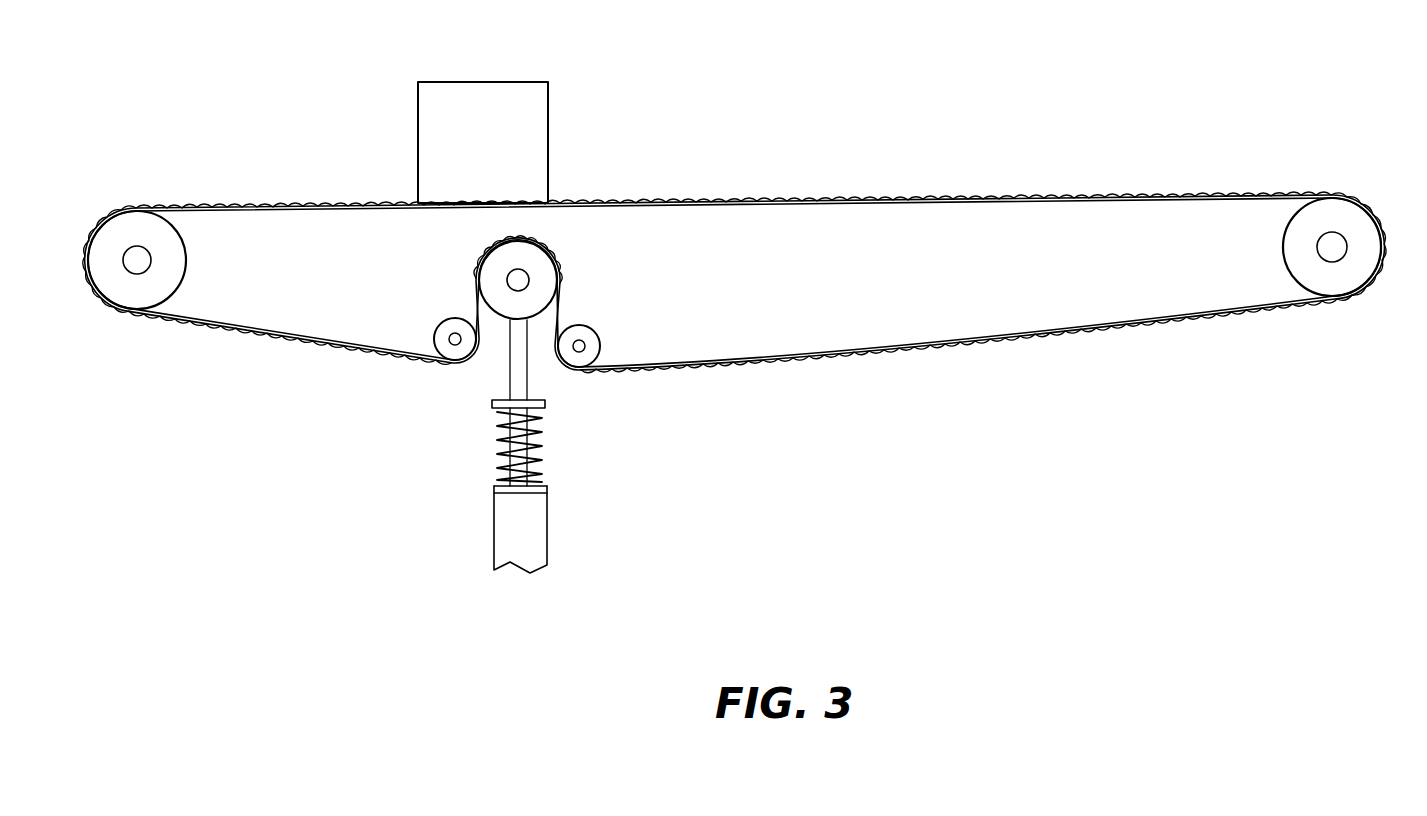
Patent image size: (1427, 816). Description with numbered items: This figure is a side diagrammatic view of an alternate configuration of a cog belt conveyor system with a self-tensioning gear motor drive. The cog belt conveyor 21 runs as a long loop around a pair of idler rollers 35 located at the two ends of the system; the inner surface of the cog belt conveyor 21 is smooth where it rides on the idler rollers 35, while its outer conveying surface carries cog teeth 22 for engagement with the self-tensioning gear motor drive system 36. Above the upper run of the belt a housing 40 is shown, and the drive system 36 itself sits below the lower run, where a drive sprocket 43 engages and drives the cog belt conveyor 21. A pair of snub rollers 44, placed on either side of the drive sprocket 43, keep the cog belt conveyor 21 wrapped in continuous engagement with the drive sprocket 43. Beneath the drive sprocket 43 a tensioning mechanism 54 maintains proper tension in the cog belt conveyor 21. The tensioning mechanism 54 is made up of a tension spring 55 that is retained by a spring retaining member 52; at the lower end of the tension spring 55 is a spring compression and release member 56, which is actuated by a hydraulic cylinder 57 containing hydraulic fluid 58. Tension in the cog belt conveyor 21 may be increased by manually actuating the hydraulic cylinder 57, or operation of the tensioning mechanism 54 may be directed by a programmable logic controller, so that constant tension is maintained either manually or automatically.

The cog belt conveyor 21 is at (940, 199).
The belt teeth 22 is at (812, 200).
The idler roller 35 is at (118, 282).
The self-tensioning gear motor drive system 36 is at (462, 295).
The drive motor housing 40 is at (498, 82).
The drive sprocket 43 is at (548, 277).
The snub roller 44 is at (442, 338).
The spring retaining member 52 is at (492, 404).
The tensioning mechanism 54 is at (556, 448).
The tension spring 55 is at (497, 451).
The spring compression and release member 56 is at (547, 488).
The hydraulic cylinder 57 is at (548, 548).
The hydraulic fluid 58 is at (502, 533).